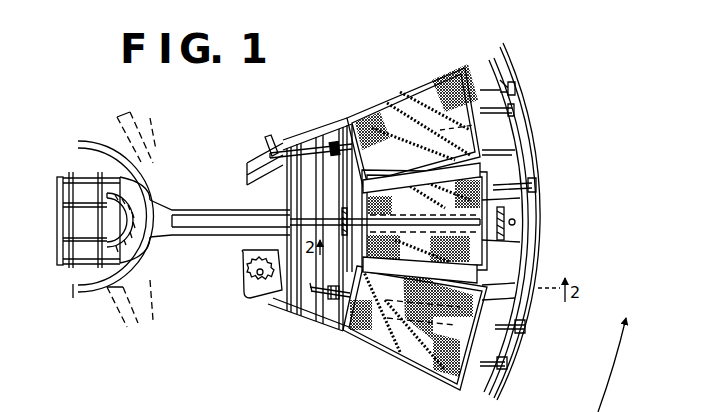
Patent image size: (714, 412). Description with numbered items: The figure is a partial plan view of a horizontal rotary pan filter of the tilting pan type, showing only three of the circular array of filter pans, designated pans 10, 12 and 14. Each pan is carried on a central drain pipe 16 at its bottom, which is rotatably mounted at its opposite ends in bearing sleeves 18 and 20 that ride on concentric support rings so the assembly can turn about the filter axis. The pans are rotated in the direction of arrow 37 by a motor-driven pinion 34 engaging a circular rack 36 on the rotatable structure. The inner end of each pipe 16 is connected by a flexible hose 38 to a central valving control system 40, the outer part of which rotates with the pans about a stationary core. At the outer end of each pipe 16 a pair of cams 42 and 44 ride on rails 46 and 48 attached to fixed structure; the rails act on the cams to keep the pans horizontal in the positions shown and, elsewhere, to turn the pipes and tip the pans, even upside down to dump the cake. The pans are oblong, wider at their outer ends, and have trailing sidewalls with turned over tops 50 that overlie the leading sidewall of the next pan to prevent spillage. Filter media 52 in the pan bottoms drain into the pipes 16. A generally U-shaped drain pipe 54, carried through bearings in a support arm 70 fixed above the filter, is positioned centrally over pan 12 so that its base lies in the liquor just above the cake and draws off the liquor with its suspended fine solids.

The filter pan 10 is at (378, 330).
The filter pan 12 is at (480, 245).
The filter pan 14 is at (410, 92).
The central drain pipe 16 is at (378, 97).
The bearing sleeve 18 is at (500, 75).
The bearing sleeve 20 is at (337, 142).
The motor-driven pinion 34 is at (241, 268).
The circular rack 36 is at (271, 303).
The arrow 37 is at (611, 396).
The flexible hose 38 is at (297, 137).
The central valving control system 40 is at (98, 172).
The cam 42 is at (527, 325).
The cam 44 is at (503, 362).
The rail 46 is at (525, 108).
The rail 48 is at (515, 90).
The turned over top 50 is at (487, 153).
The filter media 52 is at (456, 70).
The U-shaped drain pipe 54 is at (505, 192).
The support arm 70 is at (482, 221).